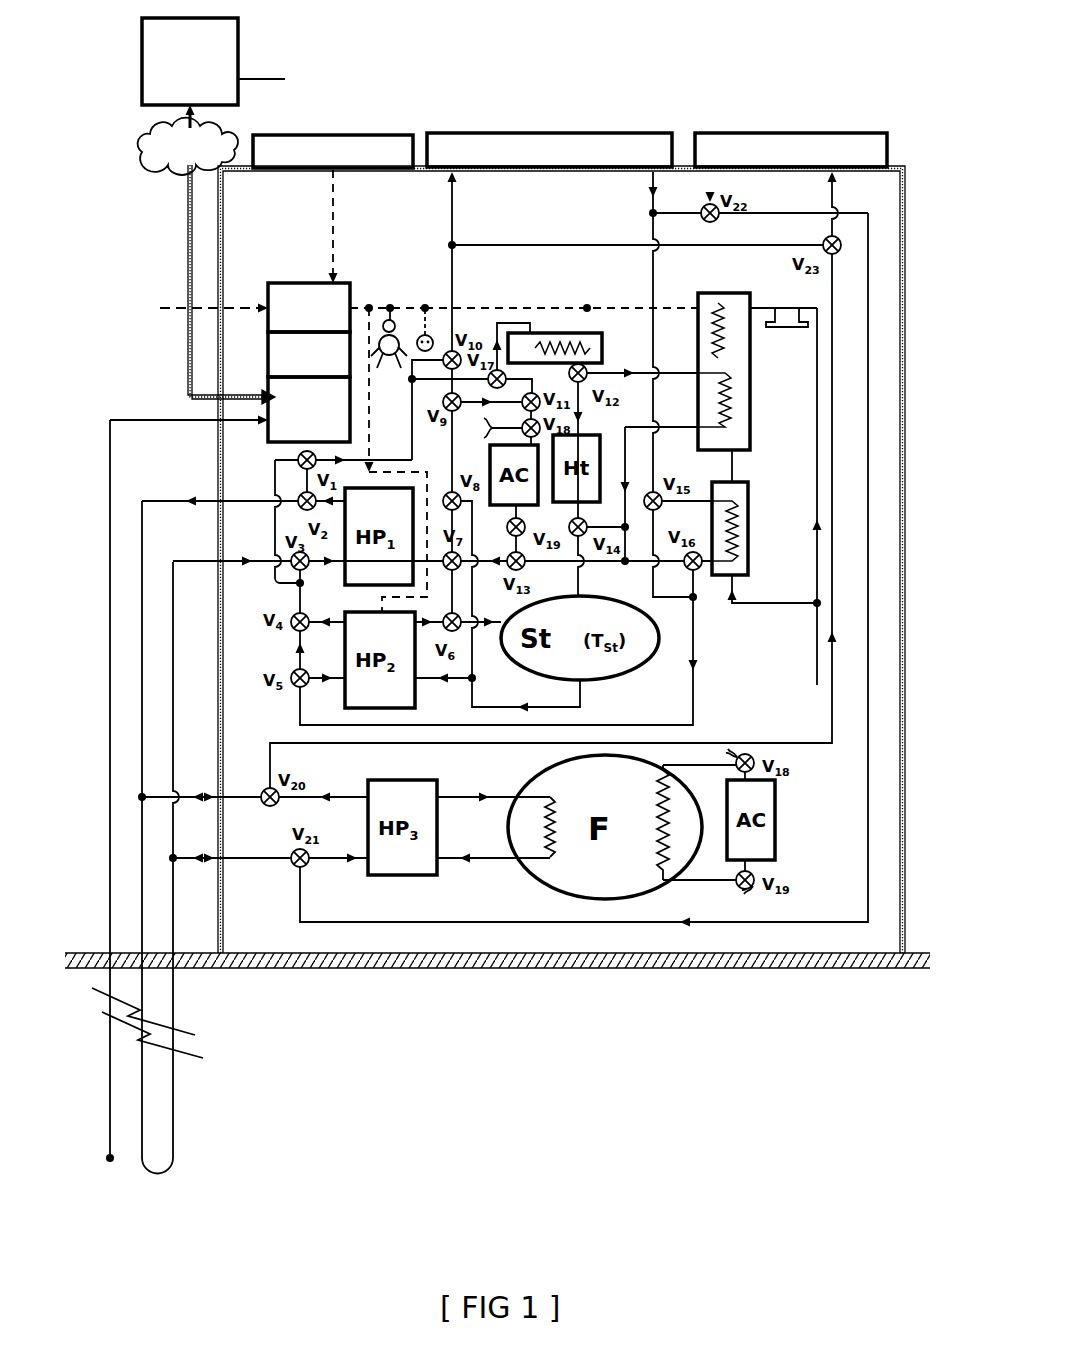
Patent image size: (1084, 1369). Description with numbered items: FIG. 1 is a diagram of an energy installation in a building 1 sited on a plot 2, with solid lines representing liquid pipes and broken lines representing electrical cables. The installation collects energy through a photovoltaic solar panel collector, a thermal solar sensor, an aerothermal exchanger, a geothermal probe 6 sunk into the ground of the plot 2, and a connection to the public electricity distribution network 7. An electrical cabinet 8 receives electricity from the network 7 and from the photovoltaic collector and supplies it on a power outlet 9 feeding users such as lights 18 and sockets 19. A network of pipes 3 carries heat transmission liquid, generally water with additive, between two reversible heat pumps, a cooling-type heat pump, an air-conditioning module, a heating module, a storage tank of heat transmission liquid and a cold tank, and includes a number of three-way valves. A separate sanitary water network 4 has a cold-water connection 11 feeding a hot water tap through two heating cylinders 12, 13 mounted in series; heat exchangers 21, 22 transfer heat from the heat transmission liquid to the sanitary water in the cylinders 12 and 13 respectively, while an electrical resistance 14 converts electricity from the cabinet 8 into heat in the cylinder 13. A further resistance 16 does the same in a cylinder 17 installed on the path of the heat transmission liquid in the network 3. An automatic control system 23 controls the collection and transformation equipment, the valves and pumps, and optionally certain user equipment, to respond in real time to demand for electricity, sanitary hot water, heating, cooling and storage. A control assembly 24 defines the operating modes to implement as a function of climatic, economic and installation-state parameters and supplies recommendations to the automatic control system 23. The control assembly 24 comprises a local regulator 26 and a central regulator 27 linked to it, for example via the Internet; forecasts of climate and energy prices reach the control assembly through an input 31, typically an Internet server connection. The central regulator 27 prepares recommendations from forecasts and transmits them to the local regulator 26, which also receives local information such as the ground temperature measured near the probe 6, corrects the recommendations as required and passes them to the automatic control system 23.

The building 1 is at (681, 99).
The plot 2 is at (190, 953).
The network of pipes for heat transmission liquid 3 is at (366, 968).
The network of pipes for sanitary water 4 is at (779, 613).
The geothermal probe 6 is at (175, 1113).
The public electricity distribution network 7 is at (168, 305).
The electrical cabinet 8 is at (309, 307).
The power outlet 9 is at (365, 305).
The cold-water connection 11 is at (815, 670).
The heating cylinder 12 is at (748, 548).
The heating cylinder 13 is at (748, 432).
The electrical resistance 14 is at (742, 348).
The resistance 16 is at (560, 318).
The cylinder 17 is at (604, 352).
The lights 18 is at (389, 370).
The sockets 19 is at (432, 334).
The heat exchanger 21 is at (740, 506).
The heat exchanger 22 is at (745, 398).
The automatic control system 23 is at (309, 354).
The control assembly 24 is at (198, 432).
The local regulator 26 is at (309, 409).
The central regulator 27 is at (239, 50).
The input 31 is at (262, 82).